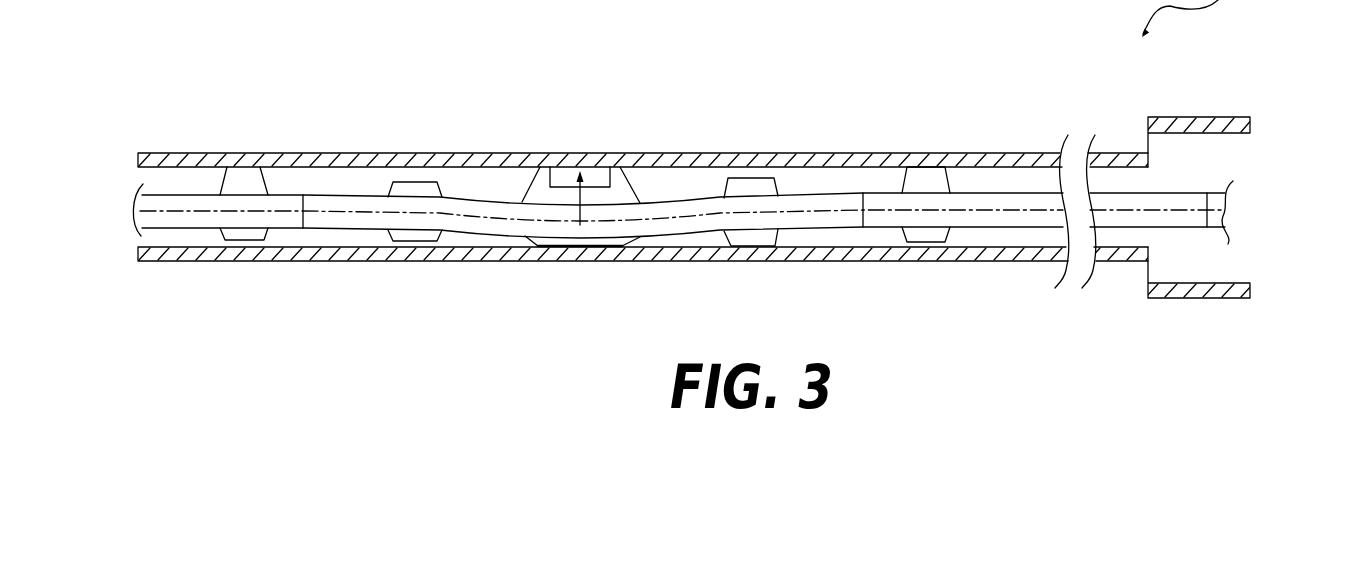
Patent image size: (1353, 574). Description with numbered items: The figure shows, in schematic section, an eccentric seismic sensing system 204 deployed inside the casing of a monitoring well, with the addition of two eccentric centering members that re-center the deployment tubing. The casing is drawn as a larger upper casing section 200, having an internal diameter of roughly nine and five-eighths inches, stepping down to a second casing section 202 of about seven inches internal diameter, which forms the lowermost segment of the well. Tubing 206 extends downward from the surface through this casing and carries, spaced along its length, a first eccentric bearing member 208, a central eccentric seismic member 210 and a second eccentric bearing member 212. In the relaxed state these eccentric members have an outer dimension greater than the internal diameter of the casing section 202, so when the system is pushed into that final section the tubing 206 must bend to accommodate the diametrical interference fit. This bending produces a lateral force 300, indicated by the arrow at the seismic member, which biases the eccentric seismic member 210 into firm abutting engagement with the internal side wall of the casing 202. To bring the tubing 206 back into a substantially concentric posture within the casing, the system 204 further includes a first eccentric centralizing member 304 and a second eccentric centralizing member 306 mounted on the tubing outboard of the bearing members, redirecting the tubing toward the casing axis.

The upper casing section 200 is at (1247, 117).
The second casing section 202 is at (495, 155).
The eccentric seismic sensing system 204 is at (795, 126).
The tubing 206 is at (1233, 181).
The first eccentric bearing member 208 is at (417, 244).
The central eccentric seismic member 210 is at (566, 247).
The second eccentric bearing member 212 is at (757, 246).
The lateral force 300 is at (610, 182).
The first eccentric centralizing member 304 is at (242, 241).
The second eccentric centralizing member 306 is at (933, 246).